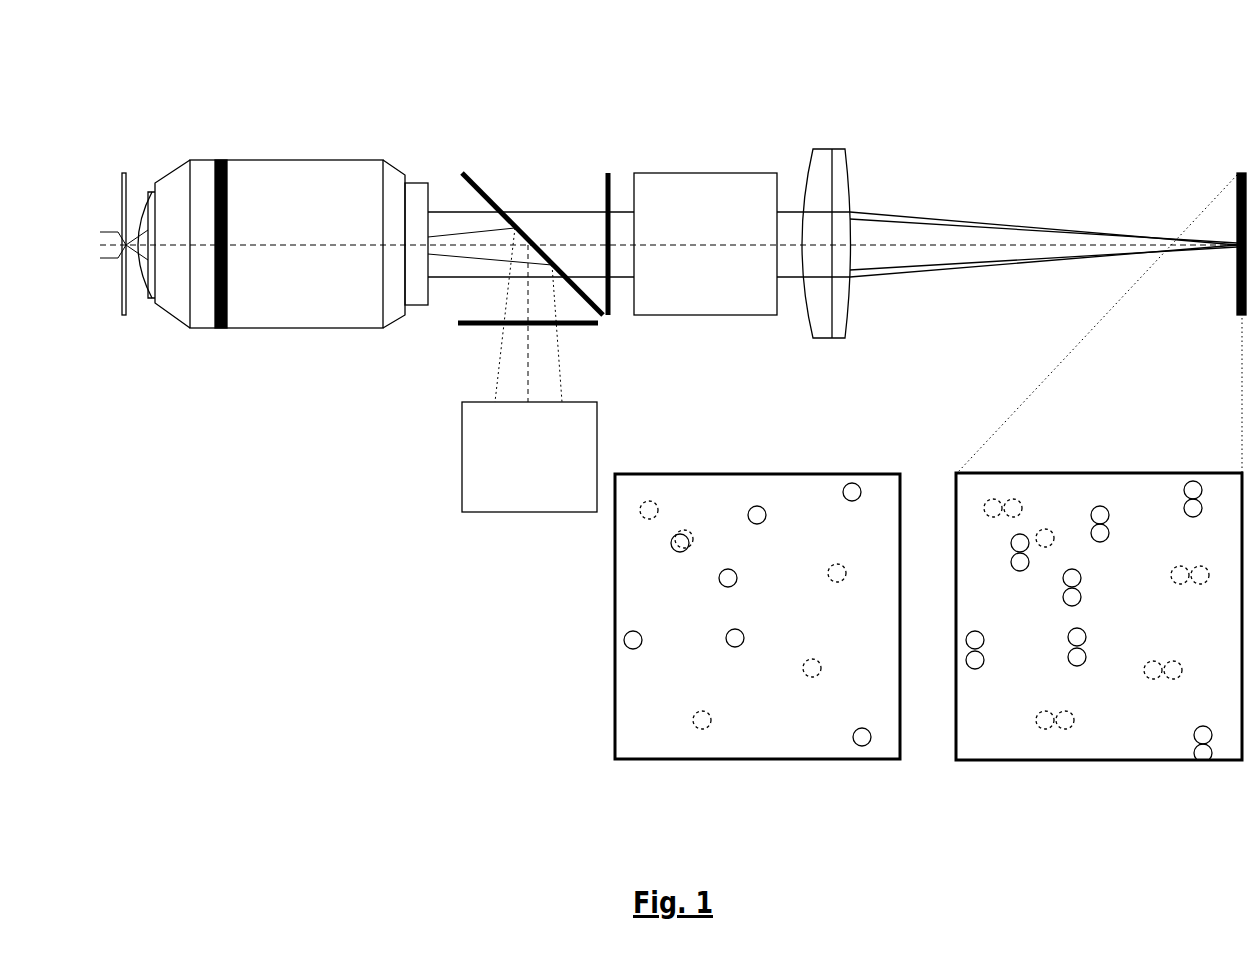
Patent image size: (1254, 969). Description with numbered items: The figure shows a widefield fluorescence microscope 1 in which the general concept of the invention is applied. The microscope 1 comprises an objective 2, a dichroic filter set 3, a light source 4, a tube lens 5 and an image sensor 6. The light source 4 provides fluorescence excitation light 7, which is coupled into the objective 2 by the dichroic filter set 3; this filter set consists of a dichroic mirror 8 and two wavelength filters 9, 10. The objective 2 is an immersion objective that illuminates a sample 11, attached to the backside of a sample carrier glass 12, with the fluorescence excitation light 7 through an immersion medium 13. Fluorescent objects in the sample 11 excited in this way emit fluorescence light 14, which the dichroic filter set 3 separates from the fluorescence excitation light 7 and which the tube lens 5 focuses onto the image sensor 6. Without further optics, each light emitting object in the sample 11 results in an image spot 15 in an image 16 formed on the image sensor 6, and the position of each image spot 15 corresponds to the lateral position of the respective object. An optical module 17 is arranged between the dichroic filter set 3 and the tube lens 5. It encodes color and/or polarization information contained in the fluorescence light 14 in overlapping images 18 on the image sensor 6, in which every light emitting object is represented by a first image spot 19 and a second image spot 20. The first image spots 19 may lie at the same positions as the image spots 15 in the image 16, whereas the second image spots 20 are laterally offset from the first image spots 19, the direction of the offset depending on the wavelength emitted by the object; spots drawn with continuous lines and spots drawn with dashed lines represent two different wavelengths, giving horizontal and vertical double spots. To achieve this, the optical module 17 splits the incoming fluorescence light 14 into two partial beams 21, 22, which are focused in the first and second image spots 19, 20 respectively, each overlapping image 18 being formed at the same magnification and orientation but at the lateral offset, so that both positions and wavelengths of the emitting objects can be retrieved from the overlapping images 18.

The widefield fluorescence microscope 1 is at (703, 92).
The objective 2 is at (337, 150).
The dichroic filter set 3 is at (541, 148).
The light source 4 is at (460, 466).
The tube lens 5 is at (828, 148).
The image sensor 6 is at (1234, 172).
The fluorescence excitation light 7 is at (492, 372).
The dichroic mirror 8 is at (474, 178).
The wavelength filter 9 is at (456, 326).
The wavelength filter 10 is at (608, 172).
The sample 11 is at (118, 250).
The sample carrier glass 12 is at (127, 318).
The immersion medium 13 is at (133, 277).
The fluorescence light 14 is at (447, 204).
The image spot 15 is at (837, 555).
The image 16 is at (614, 722).
The optical module 17 is at (734, 172).
The overlapping images 18 is at (956, 722).
The first image spot 19 is at (998, 494).
The second image spot 20 is at (1022, 495).
The partial beam 21 is at (948, 215).
The partial beam 22 is at (948, 280).